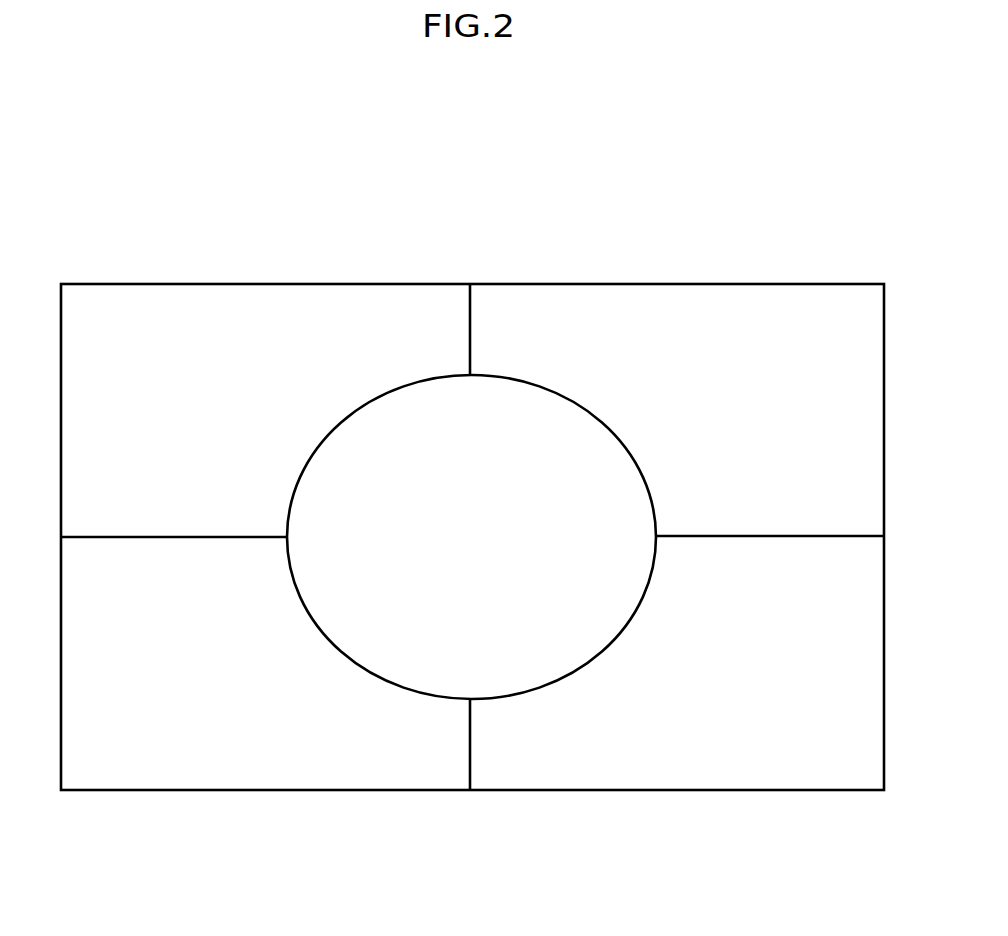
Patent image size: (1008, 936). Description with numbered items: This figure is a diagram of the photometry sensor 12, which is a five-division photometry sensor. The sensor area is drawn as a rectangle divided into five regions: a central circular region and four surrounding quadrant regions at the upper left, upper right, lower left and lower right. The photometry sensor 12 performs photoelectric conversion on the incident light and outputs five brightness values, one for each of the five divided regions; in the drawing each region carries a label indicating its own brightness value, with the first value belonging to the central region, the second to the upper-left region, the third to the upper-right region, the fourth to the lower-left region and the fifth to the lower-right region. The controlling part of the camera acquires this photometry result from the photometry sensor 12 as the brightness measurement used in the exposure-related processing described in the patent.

The photometry sensor 12 is at (859, 284).